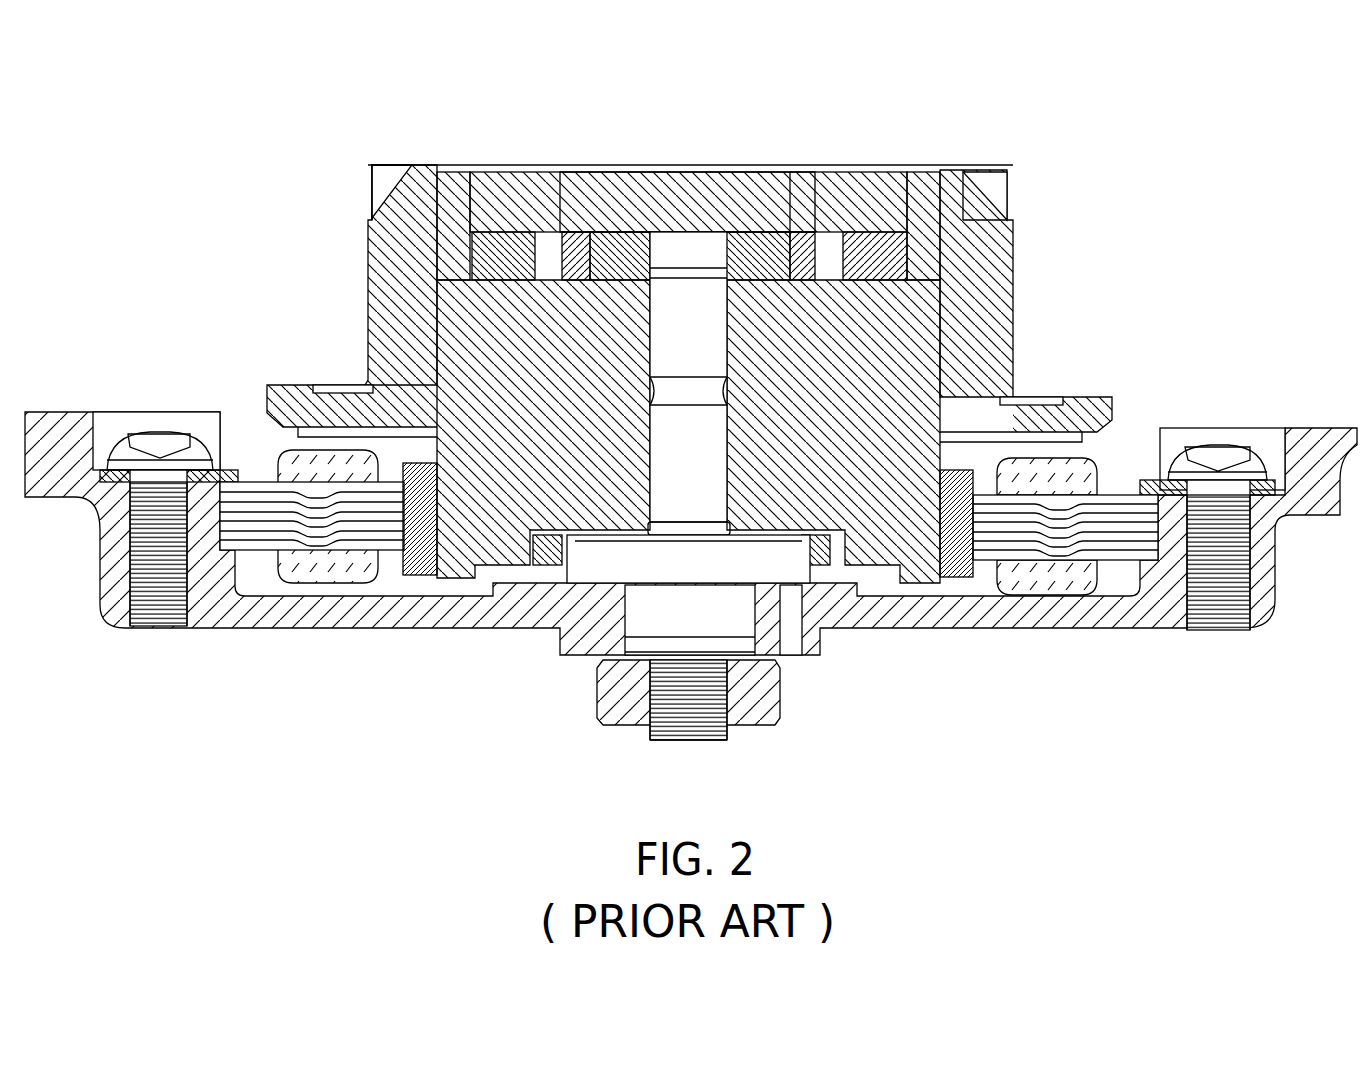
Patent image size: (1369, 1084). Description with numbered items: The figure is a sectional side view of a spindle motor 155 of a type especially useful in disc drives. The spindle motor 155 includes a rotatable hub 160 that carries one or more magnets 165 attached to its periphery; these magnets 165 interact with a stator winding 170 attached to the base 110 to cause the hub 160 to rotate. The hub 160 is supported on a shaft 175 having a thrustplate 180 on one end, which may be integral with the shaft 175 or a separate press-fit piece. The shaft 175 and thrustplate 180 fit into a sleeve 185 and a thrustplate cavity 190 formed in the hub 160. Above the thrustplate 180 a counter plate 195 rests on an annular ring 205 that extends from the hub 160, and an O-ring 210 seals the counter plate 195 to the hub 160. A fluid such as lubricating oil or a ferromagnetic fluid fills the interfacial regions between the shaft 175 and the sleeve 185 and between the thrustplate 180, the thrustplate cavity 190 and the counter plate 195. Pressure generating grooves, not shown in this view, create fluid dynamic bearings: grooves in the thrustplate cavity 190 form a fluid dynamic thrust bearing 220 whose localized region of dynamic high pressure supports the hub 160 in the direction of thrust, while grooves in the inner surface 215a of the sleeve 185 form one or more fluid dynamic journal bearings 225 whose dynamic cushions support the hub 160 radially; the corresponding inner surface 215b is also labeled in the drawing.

The base 110 is at (1050, 620).
The spindle motor 155 is at (300, 120).
The rotatable hub 160 is at (358, 359).
The magnets 165 is at (955, 577).
The stator winding 170 is at (1095, 577).
The shaft 175 is at (713, 465).
The thrustplate 180 is at (762, 210).
The sleeve 185 is at (893, 428).
The thrustplate cavity 190 is at (832, 212).
The counter plate 195 is at (497, 188).
The annular ring 205 is at (830, 267).
The O-ring 210 is at (903, 262).
The inner surface of the sleeve 215a is at (648, 360).
The core insert 215b is at (612, 290).
The fluid dynamic thrust bearing 220 is at (612, 220).
The fluid dynamic journal bearings 225 is at (730, 337).